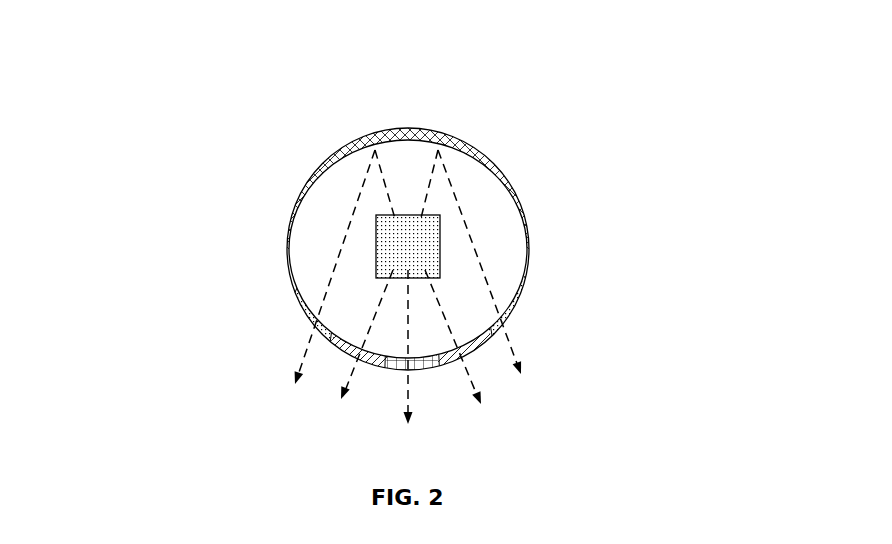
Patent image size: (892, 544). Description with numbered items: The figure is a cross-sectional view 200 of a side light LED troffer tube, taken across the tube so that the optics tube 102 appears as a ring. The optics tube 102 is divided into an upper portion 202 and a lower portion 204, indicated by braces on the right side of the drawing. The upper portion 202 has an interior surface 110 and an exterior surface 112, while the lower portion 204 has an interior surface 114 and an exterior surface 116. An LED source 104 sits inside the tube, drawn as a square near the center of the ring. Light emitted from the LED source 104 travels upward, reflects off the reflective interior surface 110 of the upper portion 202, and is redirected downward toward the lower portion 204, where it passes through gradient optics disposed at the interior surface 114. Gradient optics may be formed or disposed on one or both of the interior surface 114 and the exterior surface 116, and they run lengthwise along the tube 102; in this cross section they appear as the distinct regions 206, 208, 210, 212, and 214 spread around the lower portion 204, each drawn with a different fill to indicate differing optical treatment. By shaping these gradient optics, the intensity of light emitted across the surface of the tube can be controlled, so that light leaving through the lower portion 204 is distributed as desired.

The cross-sectional view 200 is at (170, 93).
The optics tube 102 is at (287, 247).
The LED source 104 is at (408, 246).
The interior surface 110 is at (340, 178).
The exterior surface 112 is at (415, 118).
The interior surface 114 is at (306, 292).
The exterior surface 116 is at (435, 384).
The upper portion 202 is at (567, 127).
The lower portion 204 is at (567, 247).
The gradient optics region 206 is at (310, 315).
The gradient optics region 208 is at (347, 352).
The gradient optics region 210 is at (395, 363).
The gradient optics region 212 is at (478, 345).
The gradient optics region 214 is at (512, 308).